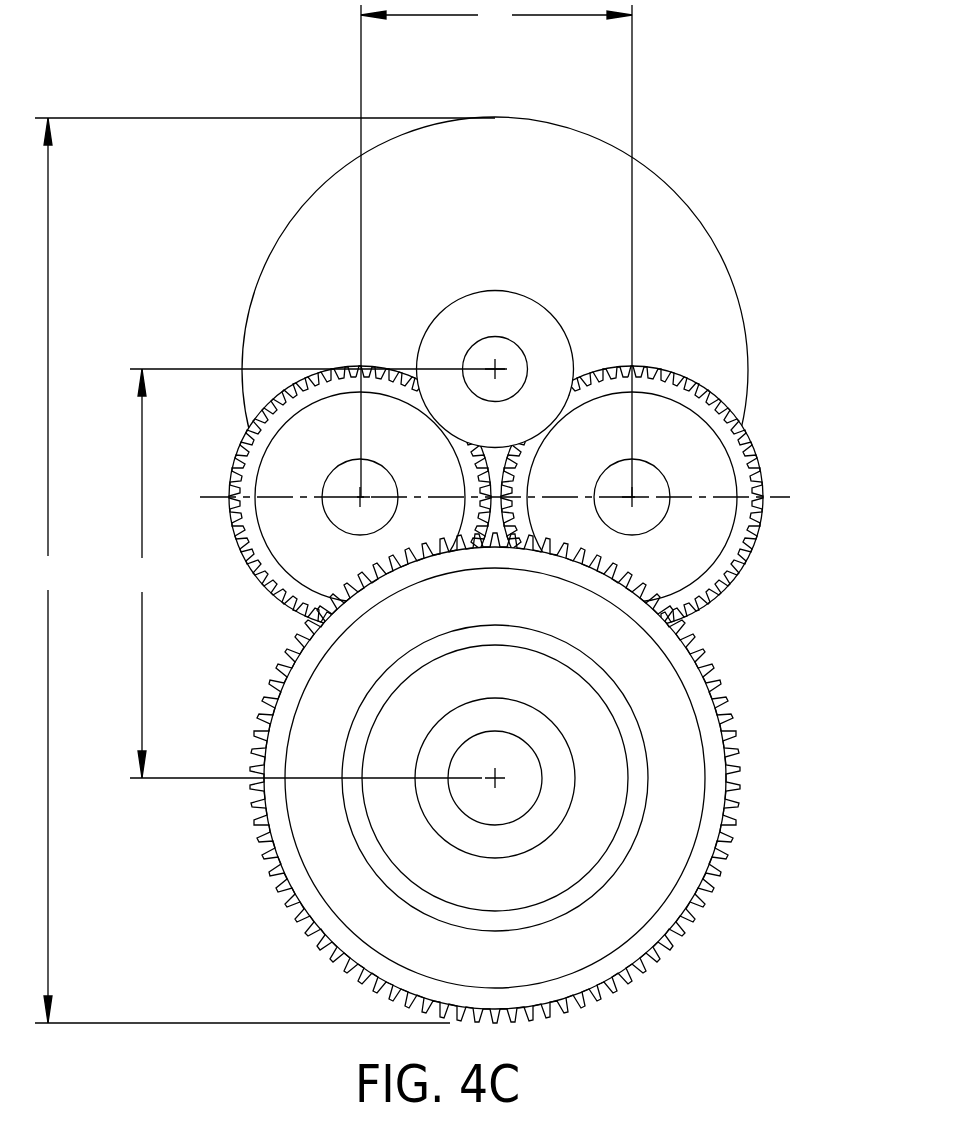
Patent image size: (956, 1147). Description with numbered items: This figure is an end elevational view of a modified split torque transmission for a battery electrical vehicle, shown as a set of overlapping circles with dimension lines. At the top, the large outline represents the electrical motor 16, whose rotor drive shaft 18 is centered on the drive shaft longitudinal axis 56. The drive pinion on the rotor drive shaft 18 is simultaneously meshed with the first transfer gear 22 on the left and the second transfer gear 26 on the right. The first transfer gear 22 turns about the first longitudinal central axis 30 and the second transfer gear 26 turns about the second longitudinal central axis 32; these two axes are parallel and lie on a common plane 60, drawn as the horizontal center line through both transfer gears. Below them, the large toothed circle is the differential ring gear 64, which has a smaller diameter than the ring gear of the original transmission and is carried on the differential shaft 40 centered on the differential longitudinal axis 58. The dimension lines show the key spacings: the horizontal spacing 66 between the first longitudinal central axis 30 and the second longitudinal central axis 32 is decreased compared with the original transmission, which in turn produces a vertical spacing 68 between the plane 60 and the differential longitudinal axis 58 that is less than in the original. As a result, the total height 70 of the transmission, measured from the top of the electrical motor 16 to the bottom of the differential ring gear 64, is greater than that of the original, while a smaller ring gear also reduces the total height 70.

The electrical motor 16 is at (692, 245).
The rotor drive shaft 18 is at (495, 358).
The first transfer gear 22 is at (343, 497).
The second transfer gear 26 is at (671, 497).
The first longitudinal central axis 30 is at (358, 497).
The second longitudinal central axis 32 is at (632, 497).
The differential shaft 40 is at (507, 807).
The drive shaft longitudinal axis 56 is at (497, 368).
The differential longitudinal axis 58 is at (500, 773).
The plane 60 is at (775, 498).
The differential ring gear 64 is at (499, 778).
The horizontal spacing 66 is at (496, 15).
The vertical spacing 68 is at (144, 573).
The total height 70 is at (49, 570).